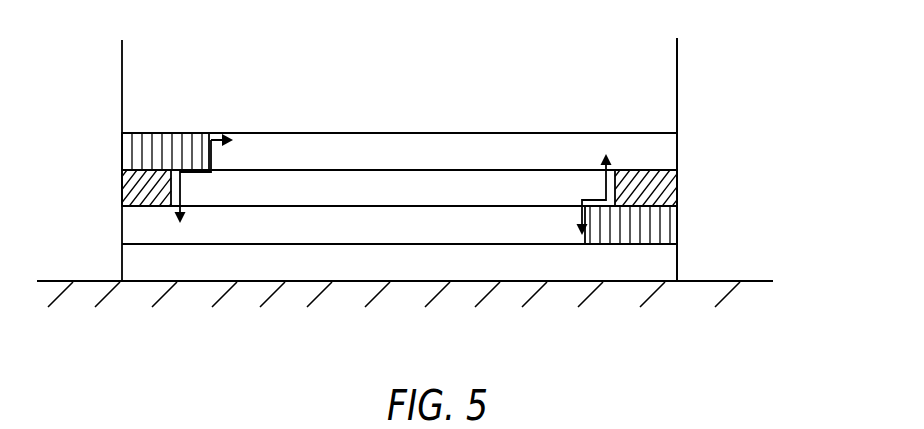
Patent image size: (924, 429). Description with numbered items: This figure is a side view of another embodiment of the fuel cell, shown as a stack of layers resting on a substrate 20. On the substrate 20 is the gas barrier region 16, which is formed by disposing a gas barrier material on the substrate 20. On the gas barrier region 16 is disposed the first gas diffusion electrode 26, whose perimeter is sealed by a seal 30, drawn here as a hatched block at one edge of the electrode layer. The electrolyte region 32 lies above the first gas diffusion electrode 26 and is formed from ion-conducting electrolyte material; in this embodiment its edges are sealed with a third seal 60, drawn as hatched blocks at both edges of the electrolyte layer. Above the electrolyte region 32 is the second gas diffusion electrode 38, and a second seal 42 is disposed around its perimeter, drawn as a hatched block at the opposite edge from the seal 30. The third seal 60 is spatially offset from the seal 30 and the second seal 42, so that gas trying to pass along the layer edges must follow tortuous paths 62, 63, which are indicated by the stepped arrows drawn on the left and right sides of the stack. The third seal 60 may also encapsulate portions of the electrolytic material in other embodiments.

The gas barrier region 16 is at (668, 262).
The substrate 20 is at (767, 282).
The first gas diffusion electrode 26 is at (138, 231).
The seal 30 is at (673, 224).
The electrolyte region 32 is at (788, 175).
The second gas diffusion electrode 38 is at (660, 152).
The second seal 42 is at (125, 163).
The third seal 60 is at (137, 184).
The tortuous path 62 is at (608, 157).
The tortuous path 63 is at (211, 131).